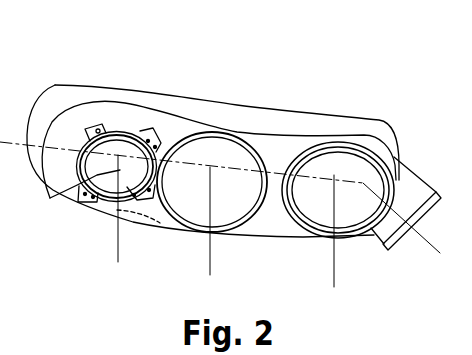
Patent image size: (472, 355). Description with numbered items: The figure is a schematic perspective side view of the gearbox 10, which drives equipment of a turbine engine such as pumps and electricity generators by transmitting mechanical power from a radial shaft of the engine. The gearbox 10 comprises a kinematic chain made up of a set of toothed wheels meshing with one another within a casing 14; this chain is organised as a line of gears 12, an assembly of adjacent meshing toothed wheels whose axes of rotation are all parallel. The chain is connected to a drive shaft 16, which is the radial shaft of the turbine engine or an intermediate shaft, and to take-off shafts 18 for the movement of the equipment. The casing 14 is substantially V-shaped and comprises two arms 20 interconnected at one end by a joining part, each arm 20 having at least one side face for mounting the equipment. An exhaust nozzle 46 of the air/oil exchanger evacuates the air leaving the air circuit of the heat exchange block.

The gearbox 10 is at (338, 90).
The line of gears 12 is at (227, 165).
The casing 14 is at (127, 87).
The drive shaft 16 is at (421, 240).
The take-off shafts 18 is at (50, 198).
The arm 20 is at (55, 100).
The exhaust nozzle 46 is at (128, 214).